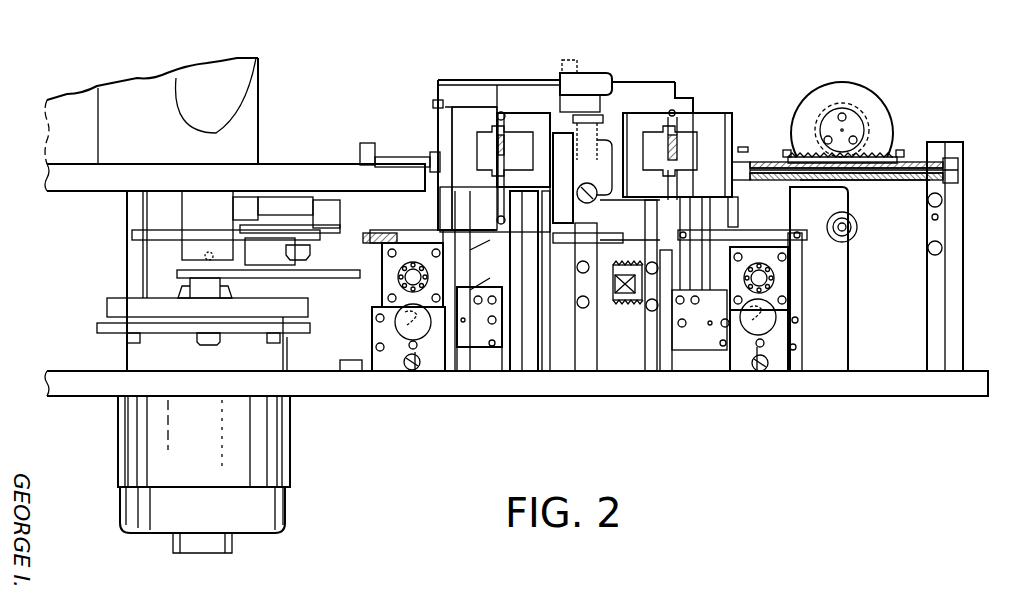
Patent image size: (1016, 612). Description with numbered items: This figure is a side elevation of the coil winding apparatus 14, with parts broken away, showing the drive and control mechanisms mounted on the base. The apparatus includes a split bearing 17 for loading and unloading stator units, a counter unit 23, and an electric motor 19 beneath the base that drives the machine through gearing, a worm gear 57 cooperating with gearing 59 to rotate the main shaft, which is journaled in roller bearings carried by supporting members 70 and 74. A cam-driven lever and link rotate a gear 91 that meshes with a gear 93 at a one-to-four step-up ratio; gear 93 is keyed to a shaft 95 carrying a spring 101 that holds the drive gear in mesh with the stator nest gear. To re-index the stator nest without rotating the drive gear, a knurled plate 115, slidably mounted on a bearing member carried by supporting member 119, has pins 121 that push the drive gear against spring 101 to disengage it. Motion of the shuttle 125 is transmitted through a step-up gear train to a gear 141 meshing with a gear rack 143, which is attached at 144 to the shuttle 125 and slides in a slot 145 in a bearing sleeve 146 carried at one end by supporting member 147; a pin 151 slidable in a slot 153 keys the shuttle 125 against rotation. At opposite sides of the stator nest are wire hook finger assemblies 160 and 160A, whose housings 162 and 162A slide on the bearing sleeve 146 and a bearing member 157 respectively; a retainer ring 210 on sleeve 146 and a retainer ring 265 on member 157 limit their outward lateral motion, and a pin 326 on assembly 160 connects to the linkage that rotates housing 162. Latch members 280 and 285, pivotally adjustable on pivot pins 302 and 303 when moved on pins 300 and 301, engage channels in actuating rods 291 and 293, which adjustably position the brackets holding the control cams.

The counter unit 23 is at (260, 103).
The coil winding apparatus 14 is at (425, 108).
The housing 162A is at (473, 113).
The wire hook finger assembly 160A is at (528, 105).
The split bearing 17 is at (617, 125).
The wire hook finger assembly 160 is at (703, 105).
The housing 162 is at (713, 118).
The bearing member 157 is at (393, 157).
The retainer ring 265 is at (432, 158).
The pin 326 is at (742, 152).
The attachment of gear rack to shuttle 144 is at (787, 157).
The gear 141 is at (843, 107).
The gear rack 143 is at (873, 153).
The shuttle 125 is at (920, 160).
The slot 145 is at (930, 157).
The bearing sleeve 146 is at (953, 173).
The retainer ring 210 is at (740, 180).
The pin 151 is at (880, 182).
The slot 153 is at (857, 185).
The supporting member 147 is at (953, 287).
The worm gear 57 is at (365, 283).
The gearing 59 is at (378, 297).
The actuating rod 291 is at (395, 328).
The pin 300 is at (407, 347).
The latch member 280 is at (407, 370).
The pivot pin 302 is at (415, 370).
The supporting member 70 is at (430, 365).
The supporting member 119 is at (525, 310).
The pins 121 is at (558, 285).
The knurled plate 115 is at (545, 323).
The gear 91 is at (667, 240).
The spring 101 is at (623, 265).
The shaft 95 is at (624, 302).
The gear 93 is at (658, 307).
The actuating rod 293 is at (777, 315).
The supporting member 74 is at (785, 333).
The pin 301 is at (764, 347).
The latch member 285 is at (753, 353).
The pivot pin 303 is at (760, 372).
The motor 19 is at (206, 441).